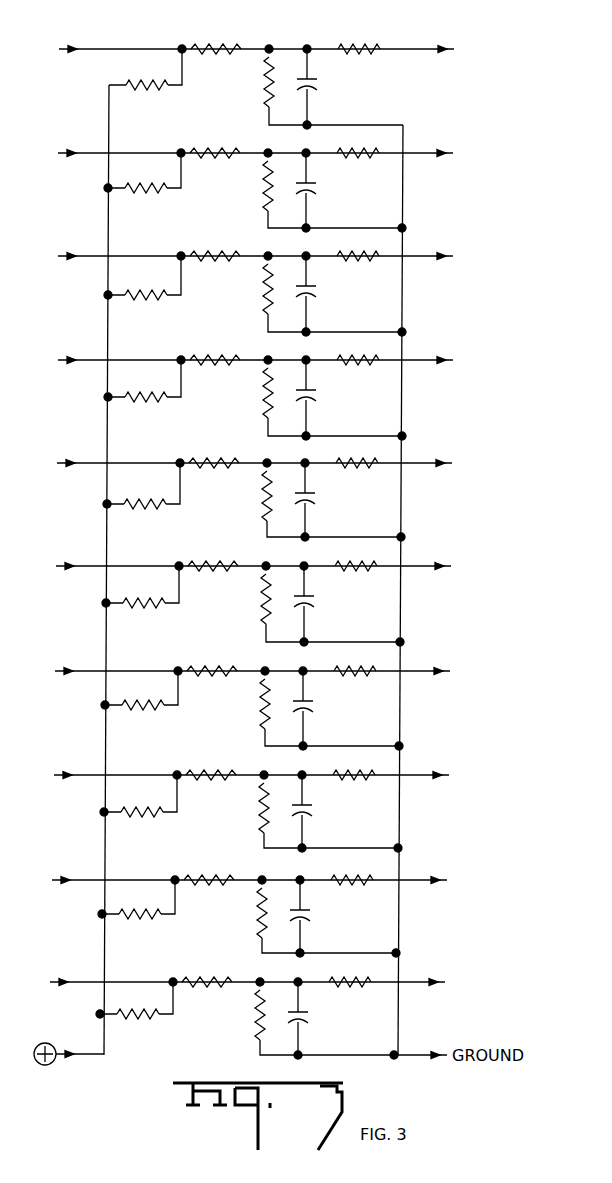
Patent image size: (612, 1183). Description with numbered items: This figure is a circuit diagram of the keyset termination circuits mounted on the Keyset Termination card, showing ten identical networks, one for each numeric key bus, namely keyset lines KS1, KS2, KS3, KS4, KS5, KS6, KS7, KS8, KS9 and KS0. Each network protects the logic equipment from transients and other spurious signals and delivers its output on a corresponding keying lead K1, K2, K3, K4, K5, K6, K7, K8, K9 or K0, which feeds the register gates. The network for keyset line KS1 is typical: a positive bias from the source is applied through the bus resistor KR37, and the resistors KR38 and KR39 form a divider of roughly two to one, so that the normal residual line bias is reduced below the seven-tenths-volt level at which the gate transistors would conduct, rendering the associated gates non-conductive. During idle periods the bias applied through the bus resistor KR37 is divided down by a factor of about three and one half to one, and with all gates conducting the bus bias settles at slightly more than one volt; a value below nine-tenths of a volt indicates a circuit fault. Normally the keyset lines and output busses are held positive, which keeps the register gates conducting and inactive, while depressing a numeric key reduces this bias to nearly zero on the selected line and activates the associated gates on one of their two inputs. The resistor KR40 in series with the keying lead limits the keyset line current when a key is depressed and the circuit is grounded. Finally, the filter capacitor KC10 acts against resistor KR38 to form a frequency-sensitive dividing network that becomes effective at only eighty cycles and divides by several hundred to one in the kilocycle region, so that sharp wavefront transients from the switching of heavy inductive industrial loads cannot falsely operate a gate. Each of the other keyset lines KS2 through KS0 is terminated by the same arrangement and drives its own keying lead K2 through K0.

The keyset line #1 KS1 is at (146, 37).
The keyset line KS2 is at (153, 141).
The keyset line KS3 is at (153, 244).
The keyset line KS4 is at (153, 348).
The keyset line KS5 is at (152, 451).
The keyset line KS6 is at (151, 554).
The keyset line KS7 is at (150, 659).
The keyset line KS8 is at (149, 763).
The keyset line KS9 is at (147, 868).
The keyset line KS0 is at (145, 970).
The keying lead K1 is at (433, 40).
The keying lead K2 is at (431, 140).
The keying lead K3 is at (431, 243).
The keying lead K4 is at (431, 347).
The keying lead K5 is at (430, 450).
The keying lead K6 is at (429, 553).
The keying lead K7 is at (428, 658).
The keying lead K8 is at (427, 762).
The keying lead K9 is at (425, 867).
The keying lead K0 is at (423, 969).
The bus resistor KR37 is at (168, 36).
The divider resistor KR38 is at (224, 33).
The divider resistor KR39 is at (263, 46).
The current limiting resistor KR40 is at (371, 35).
The filter capacitor KC10 is at (316, 46).